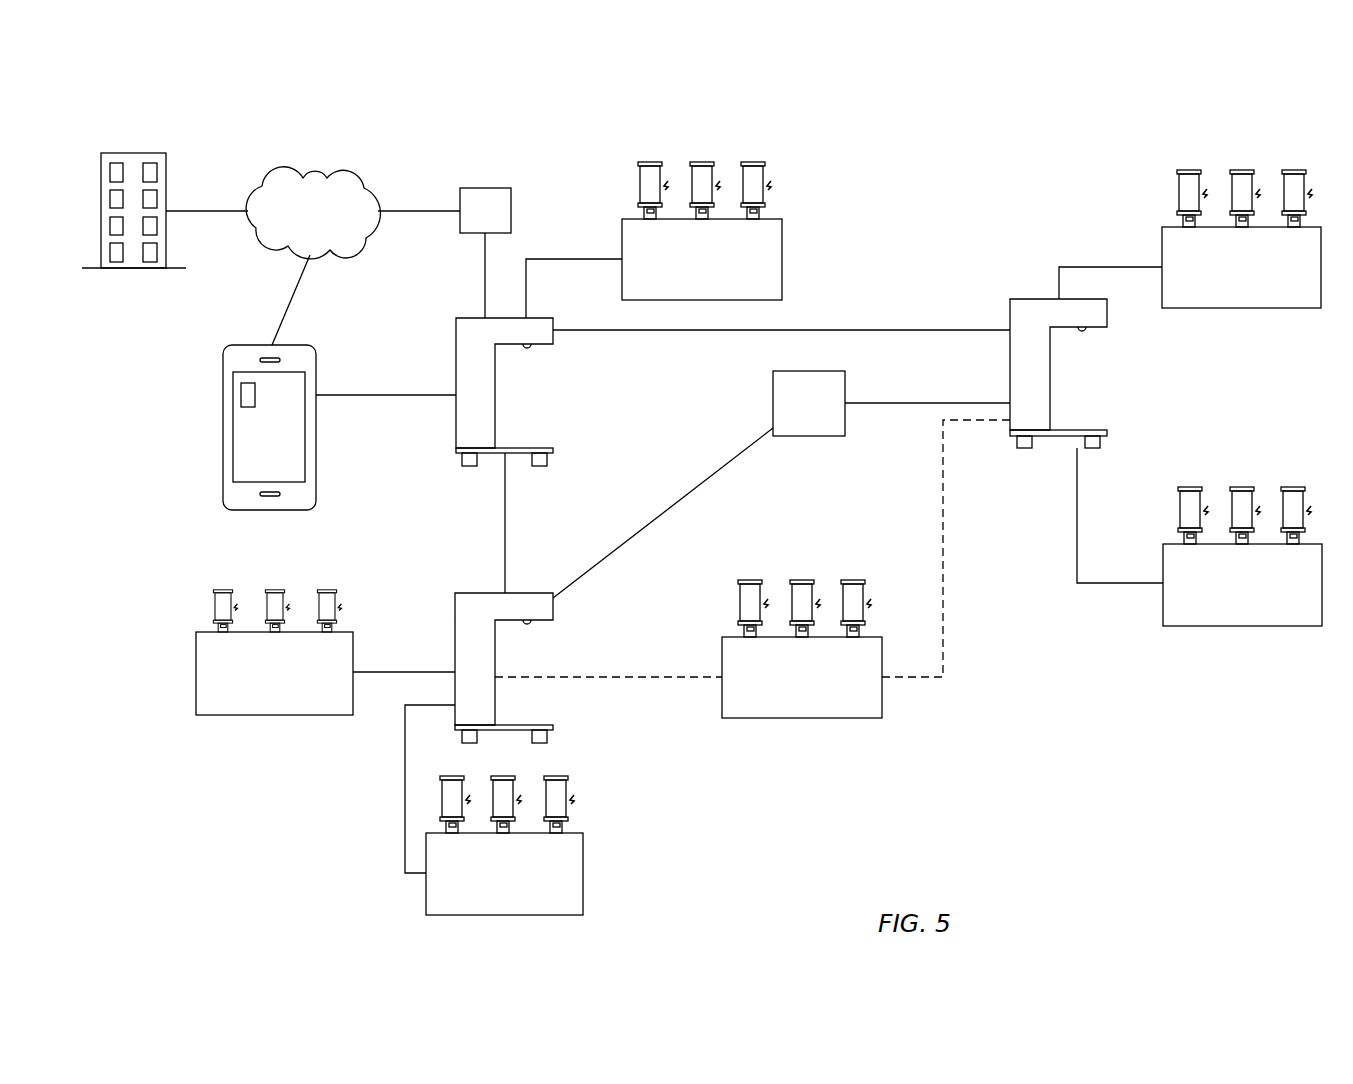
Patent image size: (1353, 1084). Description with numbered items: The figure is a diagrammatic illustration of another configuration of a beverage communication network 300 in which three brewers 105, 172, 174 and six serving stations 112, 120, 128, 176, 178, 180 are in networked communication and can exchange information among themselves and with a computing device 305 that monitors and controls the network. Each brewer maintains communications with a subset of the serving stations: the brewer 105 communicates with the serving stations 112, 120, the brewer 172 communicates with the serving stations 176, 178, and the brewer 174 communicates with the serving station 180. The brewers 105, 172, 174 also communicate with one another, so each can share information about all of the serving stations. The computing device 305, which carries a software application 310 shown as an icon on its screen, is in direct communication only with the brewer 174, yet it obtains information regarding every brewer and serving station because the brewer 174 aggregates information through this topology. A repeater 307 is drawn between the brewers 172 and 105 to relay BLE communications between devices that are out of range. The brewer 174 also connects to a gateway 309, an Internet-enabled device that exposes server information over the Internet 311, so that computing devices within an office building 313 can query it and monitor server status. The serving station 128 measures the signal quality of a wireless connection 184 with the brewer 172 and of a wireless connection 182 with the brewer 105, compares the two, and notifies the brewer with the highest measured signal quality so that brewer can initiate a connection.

The beverage communication network 300 is at (170, 90).
The office building 313 is at (186, 169).
The Internet 311 is at (335, 224).
The gateway 309 is at (511, 208).
The software application 310 is at (241, 392).
The computing device 305 is at (223, 465).
The brewer 174 is at (456, 346).
The serving station 180 is at (800, 230).
The brewer 105 is at (1032, 299).
The serving station 112 is at (1240, 147).
The repeater 307 is at (832, 415).
The brewer 172 is at (455, 630).
The serving station 178 is at (282, 735).
The serving station 176 is at (480, 931).
The serving station 128 is at (813, 732).
The wireless connection 182 is at (943, 601).
The wireless connection 184 is at (648, 680).
The serving station 120 is at (1249, 640).